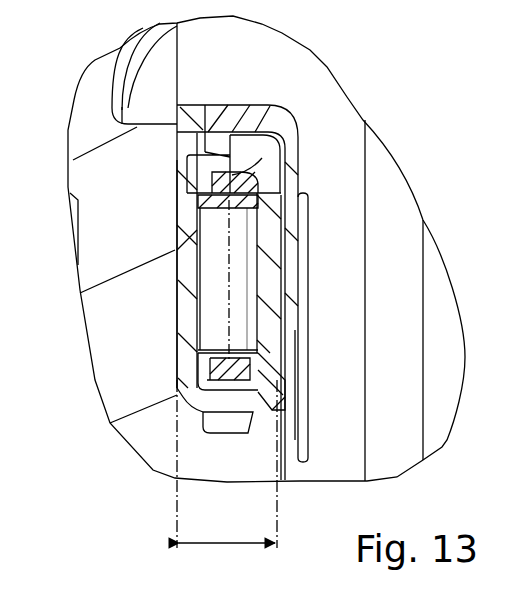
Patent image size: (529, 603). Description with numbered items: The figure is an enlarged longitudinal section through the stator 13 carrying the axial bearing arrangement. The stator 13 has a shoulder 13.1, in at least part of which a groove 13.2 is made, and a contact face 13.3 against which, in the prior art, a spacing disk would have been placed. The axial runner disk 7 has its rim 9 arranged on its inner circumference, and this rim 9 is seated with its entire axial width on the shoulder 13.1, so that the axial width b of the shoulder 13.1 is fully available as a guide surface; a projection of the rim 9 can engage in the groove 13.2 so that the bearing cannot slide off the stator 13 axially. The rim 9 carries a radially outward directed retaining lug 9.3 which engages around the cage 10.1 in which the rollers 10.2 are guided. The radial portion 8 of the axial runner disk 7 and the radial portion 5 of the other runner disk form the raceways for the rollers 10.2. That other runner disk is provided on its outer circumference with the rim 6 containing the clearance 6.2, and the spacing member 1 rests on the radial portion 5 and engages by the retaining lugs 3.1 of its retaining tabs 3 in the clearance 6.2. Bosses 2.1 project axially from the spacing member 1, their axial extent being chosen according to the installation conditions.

The spacing member 1 is at (302, 110).
The bosses 2.1 is at (303, 205).
The retaining tabs 3 is at (243, 118).
The retaining lugs 3.1 is at (193, 125).
The radial portion 5 is at (268, 330).
The rim 6 is at (267, 155).
The clearance 6.2 is at (190, 164).
The axial runner disk 7 is at (170, 230).
The radial portion 8 is at (187, 302).
The rim 9 is at (228, 402).
The retaining lug 9.3 is at (283, 385).
The cage 10.1 is at (262, 176).
The rollers 10.2 is at (272, 262).
The stator 13 is at (127, 383).
The shoulder 13.1 is at (268, 428).
The groove 13.2 is at (233, 416).
The contact face 13.3 is at (170, 345).
The axial width b is at (222, 545).